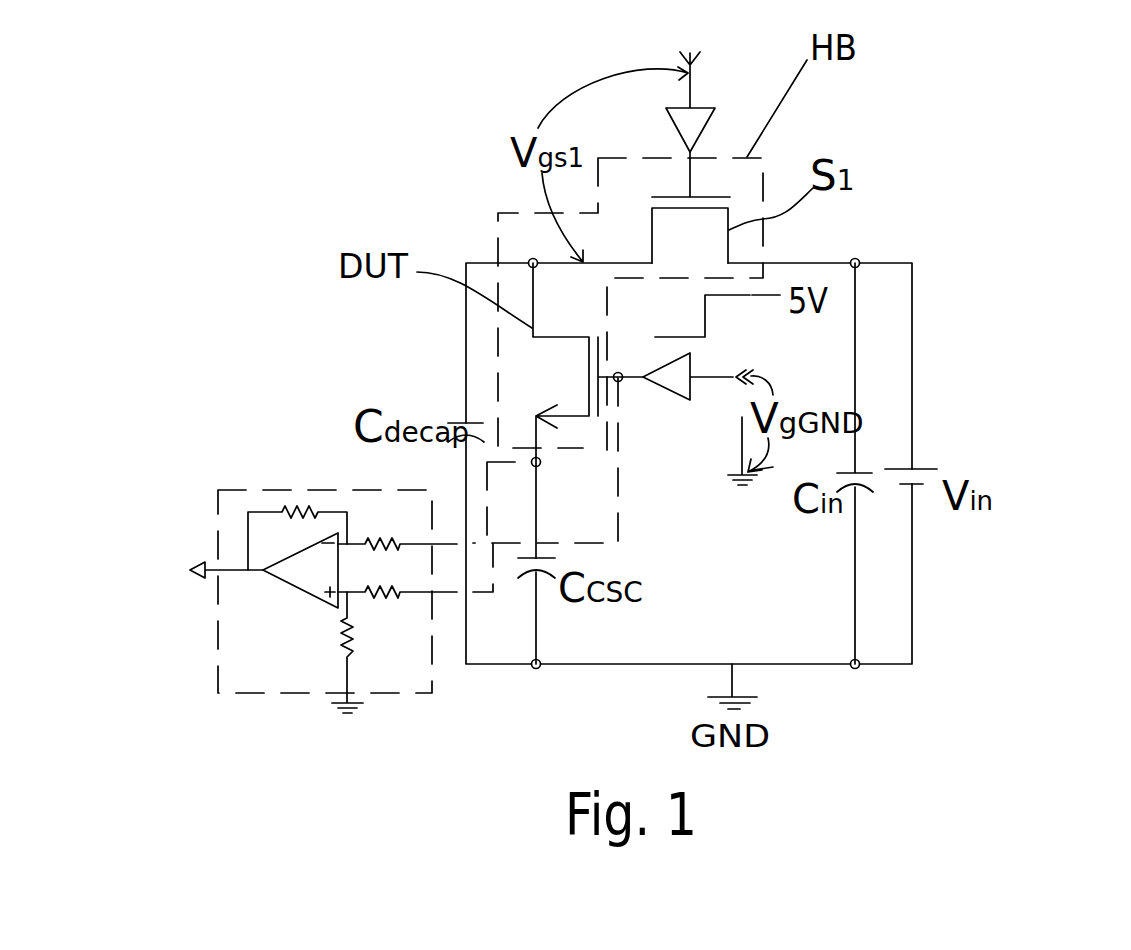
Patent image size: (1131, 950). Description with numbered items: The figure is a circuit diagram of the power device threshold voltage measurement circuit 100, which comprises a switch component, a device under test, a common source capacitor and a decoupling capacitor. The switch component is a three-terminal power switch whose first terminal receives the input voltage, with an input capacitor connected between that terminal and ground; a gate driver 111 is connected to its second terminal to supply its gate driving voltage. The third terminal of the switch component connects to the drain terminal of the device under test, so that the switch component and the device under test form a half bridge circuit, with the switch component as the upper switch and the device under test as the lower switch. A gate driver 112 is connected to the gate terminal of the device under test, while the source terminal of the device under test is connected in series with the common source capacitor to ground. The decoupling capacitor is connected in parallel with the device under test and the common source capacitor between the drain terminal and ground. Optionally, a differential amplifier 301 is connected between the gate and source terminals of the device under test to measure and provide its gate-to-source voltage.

The power device threshold voltage measurement circuit 100 is at (1068, 60).
The gate driver 111 is at (703, 107).
The gate driver 112 is at (683, 400).
The differential amplifier 301 is at (258, 488).